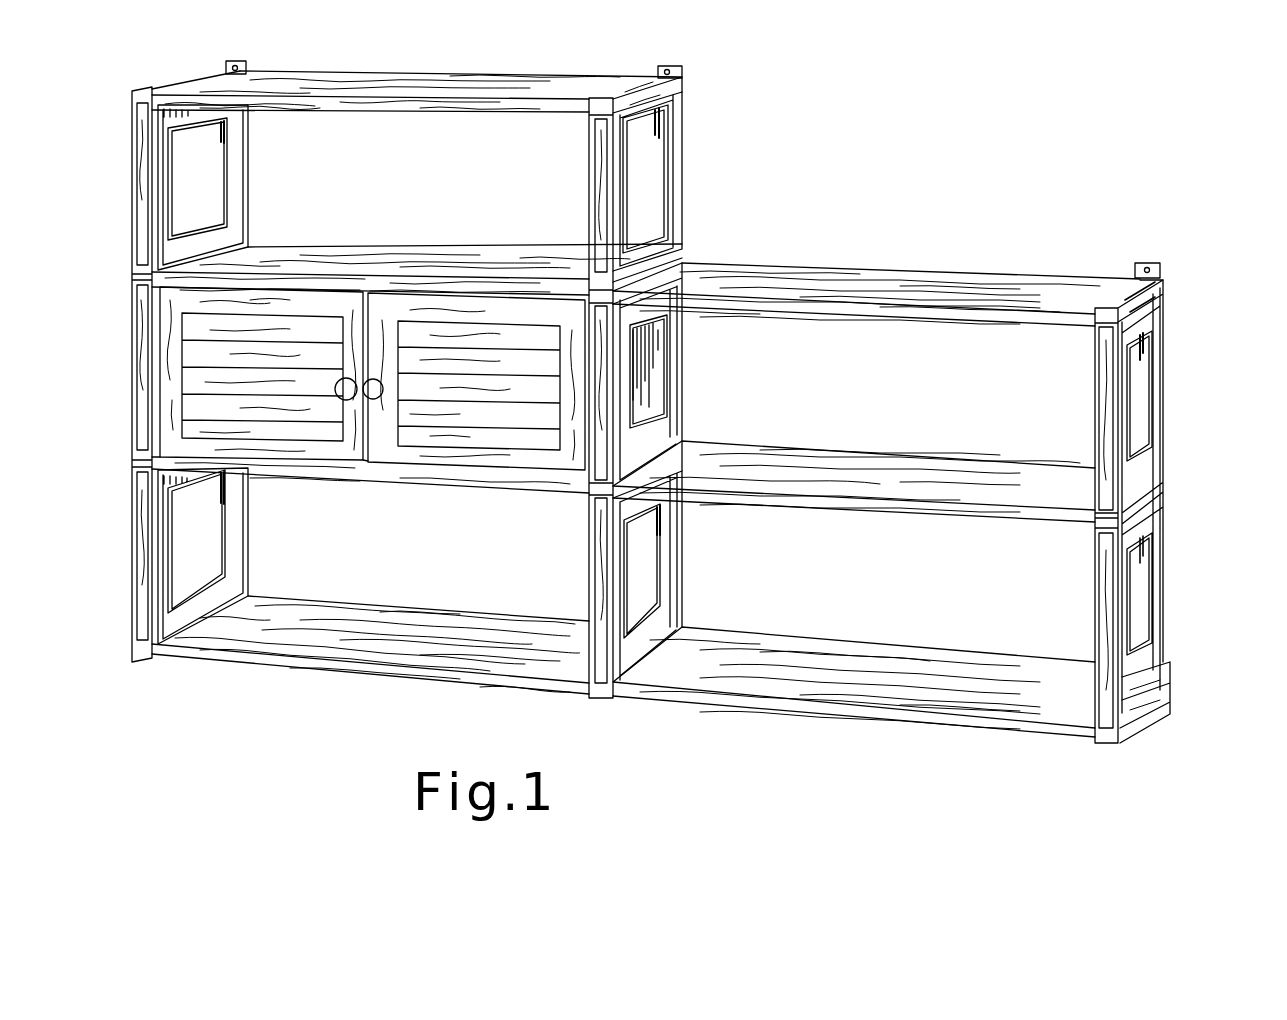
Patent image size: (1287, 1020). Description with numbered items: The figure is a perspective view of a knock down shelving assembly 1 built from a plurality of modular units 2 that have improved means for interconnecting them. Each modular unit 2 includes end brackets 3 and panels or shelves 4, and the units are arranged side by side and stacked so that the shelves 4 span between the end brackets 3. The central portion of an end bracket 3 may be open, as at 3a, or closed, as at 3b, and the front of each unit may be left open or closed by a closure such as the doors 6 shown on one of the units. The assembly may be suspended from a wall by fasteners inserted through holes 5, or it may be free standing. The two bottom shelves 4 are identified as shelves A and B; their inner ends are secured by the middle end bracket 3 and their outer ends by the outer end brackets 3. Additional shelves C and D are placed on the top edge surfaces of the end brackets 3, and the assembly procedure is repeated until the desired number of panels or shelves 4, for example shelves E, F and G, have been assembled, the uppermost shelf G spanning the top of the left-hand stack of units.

The knock down shelving assembly 1 is at (646, 358).
The modular unit 2 is at (891, 473).
The end bracket 3 is at (699, 402).
The open central portion of end bracket 3a is at (1147, 393).
The closed central portion of end bracket 3b is at (643, 388).
The panel or shelf 4 is at (854, 478).
The hole 5 is at (669, 68).
The door 6 is at (465, 397).
The bottom shelf A is at (428, 627).
The bottom shelf B is at (820, 660).
The additional shelf C is at (470, 478).
The additional shelf D is at (958, 500).
The shelf E is at (382, 262).
The shelf F is at (803, 267).
The shelf G is at (457, 92).